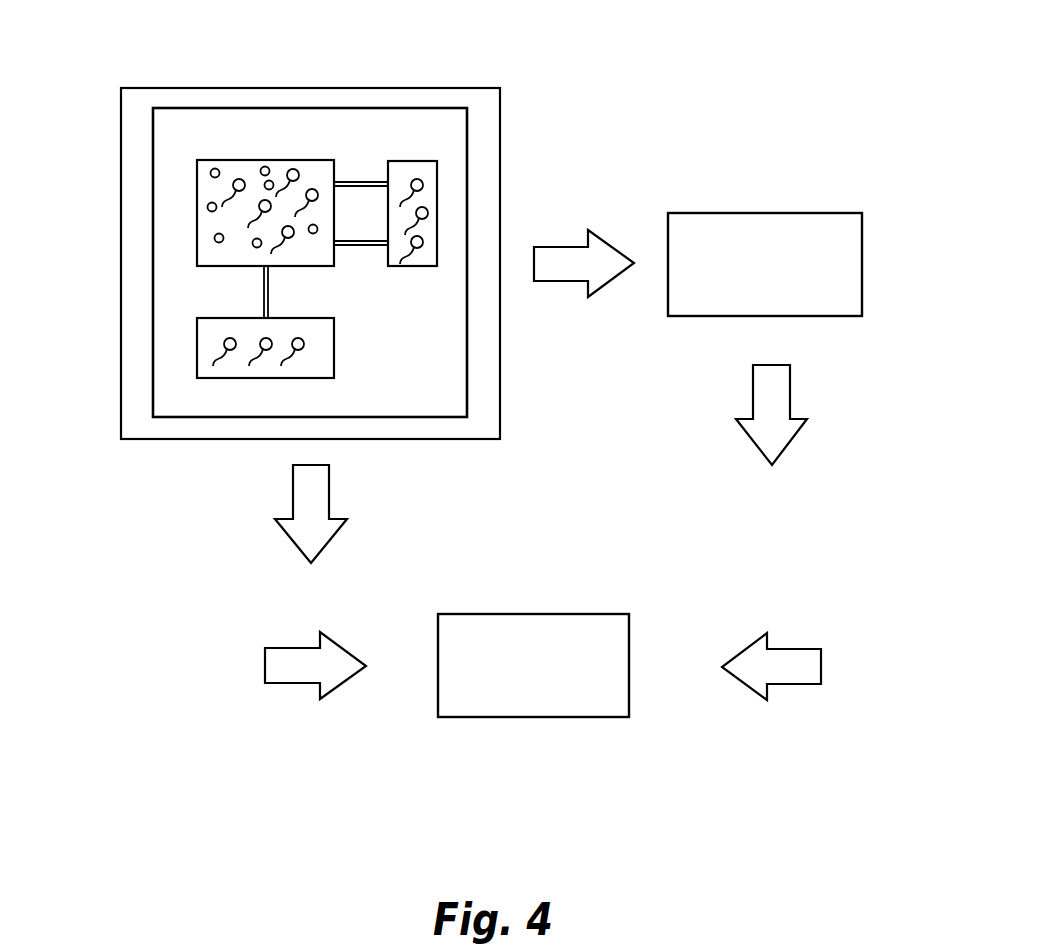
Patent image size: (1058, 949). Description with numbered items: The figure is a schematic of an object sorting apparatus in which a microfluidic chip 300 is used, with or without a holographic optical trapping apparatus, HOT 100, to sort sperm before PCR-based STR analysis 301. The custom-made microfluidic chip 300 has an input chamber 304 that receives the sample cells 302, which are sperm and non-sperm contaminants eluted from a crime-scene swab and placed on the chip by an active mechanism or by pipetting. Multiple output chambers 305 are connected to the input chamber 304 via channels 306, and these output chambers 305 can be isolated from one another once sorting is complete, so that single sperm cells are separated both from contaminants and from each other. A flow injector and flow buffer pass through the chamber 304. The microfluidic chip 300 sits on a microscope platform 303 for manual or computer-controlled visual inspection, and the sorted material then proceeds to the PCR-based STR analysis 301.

The holographic optical trapping apparatus (HOT) 100 is at (862, 235).
The microfluidic chip 300 is at (467, 155).
The PCR-based STR analysis 301 is at (629, 699).
The sample cells 302 is at (232, 170).
The microscope platform 303 is at (500, 107).
The input chamber 304 is at (277, 162).
The output chambers 305 is at (437, 215).
The channels 306 is at (347, 182).